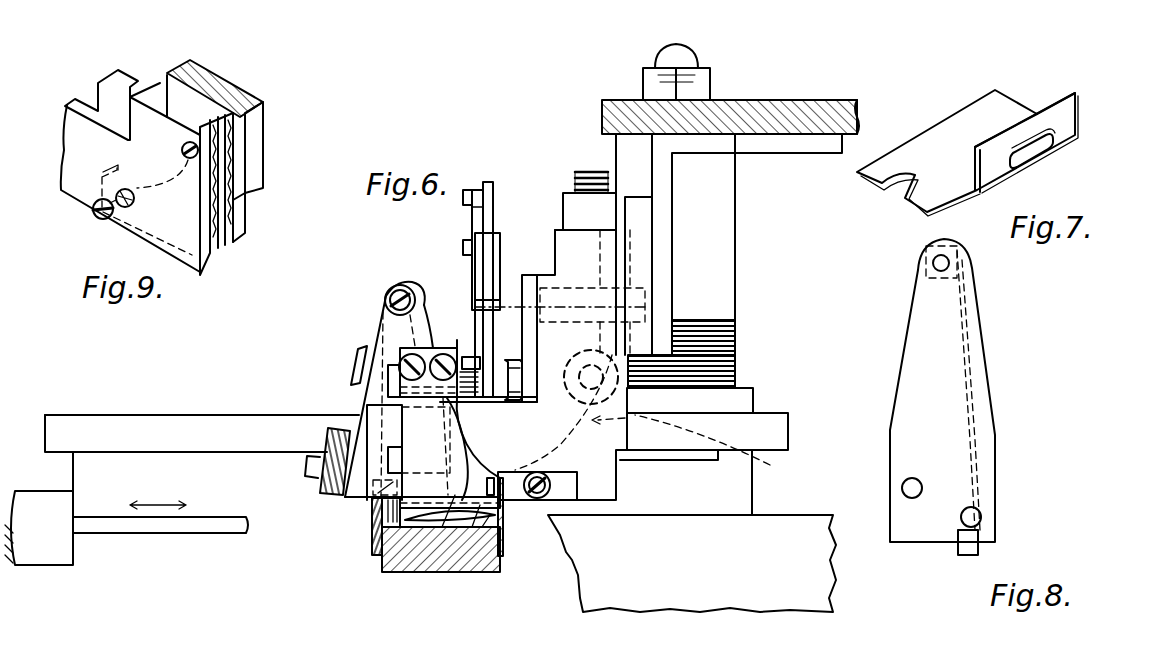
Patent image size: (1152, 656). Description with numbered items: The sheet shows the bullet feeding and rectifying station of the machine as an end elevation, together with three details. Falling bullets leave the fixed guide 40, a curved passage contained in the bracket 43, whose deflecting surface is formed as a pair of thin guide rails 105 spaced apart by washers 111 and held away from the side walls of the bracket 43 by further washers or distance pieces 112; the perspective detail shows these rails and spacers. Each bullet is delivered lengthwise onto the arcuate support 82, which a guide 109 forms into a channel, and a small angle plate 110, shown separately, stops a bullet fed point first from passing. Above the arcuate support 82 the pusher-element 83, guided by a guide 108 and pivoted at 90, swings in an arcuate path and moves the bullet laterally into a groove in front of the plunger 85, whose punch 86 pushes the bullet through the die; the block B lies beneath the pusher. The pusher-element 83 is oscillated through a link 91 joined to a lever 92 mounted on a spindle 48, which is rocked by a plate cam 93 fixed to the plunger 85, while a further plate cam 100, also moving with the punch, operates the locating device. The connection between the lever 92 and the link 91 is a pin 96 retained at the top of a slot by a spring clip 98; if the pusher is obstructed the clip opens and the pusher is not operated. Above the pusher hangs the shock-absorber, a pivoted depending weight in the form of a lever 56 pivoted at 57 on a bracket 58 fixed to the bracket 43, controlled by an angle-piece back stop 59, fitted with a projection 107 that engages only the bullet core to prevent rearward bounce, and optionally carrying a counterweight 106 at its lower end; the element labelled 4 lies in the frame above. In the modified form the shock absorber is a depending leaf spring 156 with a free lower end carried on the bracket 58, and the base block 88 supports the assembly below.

In FIG. 6, the adjusting screw 4 is at (580, 172).
In FIG. 6, the guide 40 is at (752, 450).
In FIG. 6, the bracket 43 is at (630, 405).
In FIG. 9, the bracket 43 is at (147, 97).
In FIG. 6, the spindle 48 is at (474, 300).
In FIG. 6, the lever 56 is at (365, 404).
In FIG. 6, the pivot 57 is at (388, 300).
In FIG. 6, the bracket 58 is at (422, 286).
In FIG. 8, the bracket 58 is at (975, 350).
In FIG. 6, the back stop 59 is at (355, 372).
In FIG. 6, the arcuate support 82 is at (478, 562).
In FIG. 6, the pusher-element 83 is at (377, 555).
In FIG. 6, the plunger 85 is at (38, 553).
In FIG. 6, the punch 86 is at (150, 532).
In FIG. 6, the base 88 is at (592, 538).
In FIG. 6, the pivot 90 is at (388, 388).
In FIG. 6, the link 91 is at (493, 205).
In FIG. 6, the lever 92 is at (500, 250).
In FIG. 6, the plate cam 93 is at (780, 434).
In FIG. 6, the pin 96 is at (464, 242).
In FIG. 6, the spring clip 98 is at (470, 195).
In FIG. 6, the plate cam 100 is at (697, 455).
In FIG. 9, the guide rails 105 is at (228, 222).
In FIG. 6, the counterweight 106 is at (325, 483).
In FIG. 6, the projection 107 is at (380, 512).
In FIG. 6, the guide 108 is at (372, 548).
In FIG. 6, the guide 109 is at (505, 553).
In FIG. 6, the angle plate 110 is at (562, 480).
In FIG. 7, the angle plate 110 is at (962, 124).
In FIG. 9, the washers 111 is at (133, 190).
In FIG. 9, the washers or distance pieces 112 is at (134, 206).
In FIG. 8, the leaf spring 156 is at (968, 410).
In FIG. 6, the block B is at (435, 573).